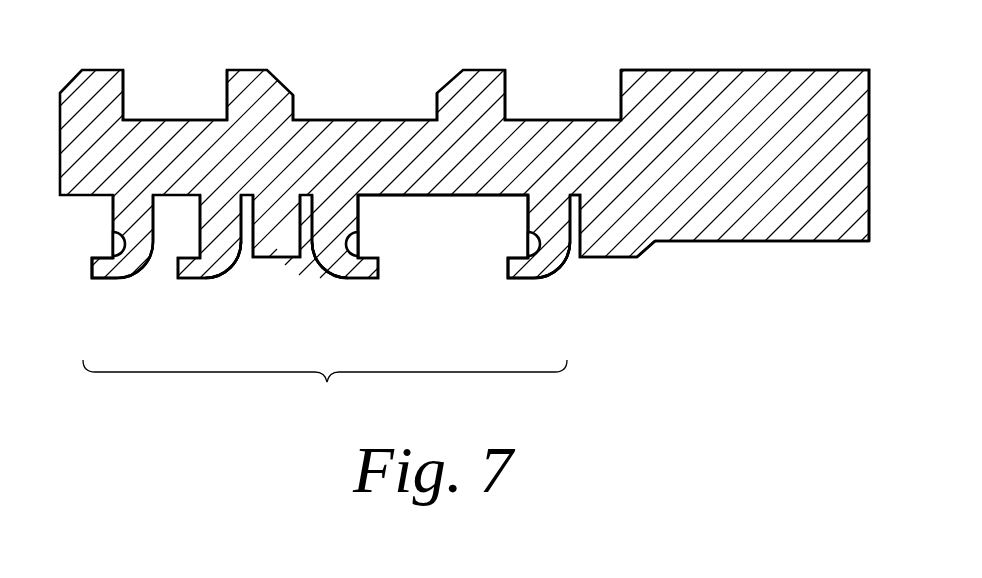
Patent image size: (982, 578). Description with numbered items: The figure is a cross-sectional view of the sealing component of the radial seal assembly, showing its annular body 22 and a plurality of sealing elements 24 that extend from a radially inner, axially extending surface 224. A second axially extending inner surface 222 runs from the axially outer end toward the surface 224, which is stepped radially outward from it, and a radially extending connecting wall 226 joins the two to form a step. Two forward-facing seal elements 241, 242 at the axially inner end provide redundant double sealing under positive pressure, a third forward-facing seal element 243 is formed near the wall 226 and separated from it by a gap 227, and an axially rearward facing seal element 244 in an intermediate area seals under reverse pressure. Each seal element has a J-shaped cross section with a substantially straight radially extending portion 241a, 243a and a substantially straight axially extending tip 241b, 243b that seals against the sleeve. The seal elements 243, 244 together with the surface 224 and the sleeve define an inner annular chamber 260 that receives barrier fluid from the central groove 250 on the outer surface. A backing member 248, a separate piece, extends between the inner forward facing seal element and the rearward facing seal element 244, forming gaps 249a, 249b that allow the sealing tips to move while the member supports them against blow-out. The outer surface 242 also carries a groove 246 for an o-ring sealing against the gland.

The annular body 22 is at (464, 174).
The sealing elements 24 is at (325, 385).
The second axially extending inner surface 222 is at (700, 242).
The radially inner, axially extending surface 224 is at (445, 197).
The radially extending connecting wall 226 is at (578, 245).
The gap 227 is at (573, 260).
The forward-facing seal element 241 is at (108, 280).
The radially extending portion 241a is at (112, 209).
The axially extending portion 241b is at (93, 280).
The forward-facing seal element 242 is at (688, 70).
The forward-facing seal element 243 is at (513, 280).
The radially extending portion 243a is at (525, 242).
The axially extending portion 243b is at (523, 268).
The rearward facing seal element 244 is at (365, 280).
The groove 246 is at (167, 95).
The backing member 248 is at (553, 95).
The gap 249a is at (238, 272).
The gap 249b is at (307, 250).
The central groove 250 is at (358, 92).
The inner annular chamber 260 is at (443, 226).